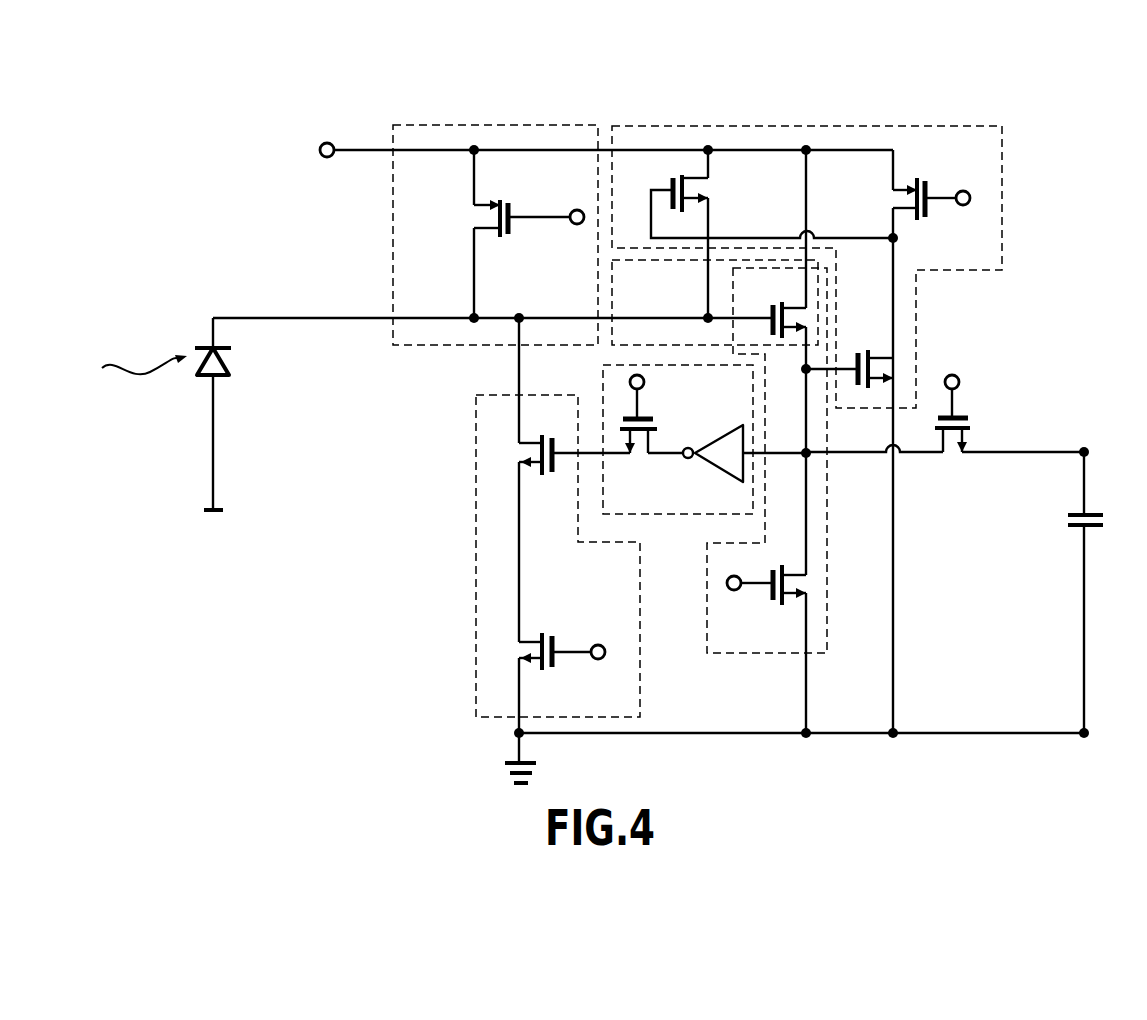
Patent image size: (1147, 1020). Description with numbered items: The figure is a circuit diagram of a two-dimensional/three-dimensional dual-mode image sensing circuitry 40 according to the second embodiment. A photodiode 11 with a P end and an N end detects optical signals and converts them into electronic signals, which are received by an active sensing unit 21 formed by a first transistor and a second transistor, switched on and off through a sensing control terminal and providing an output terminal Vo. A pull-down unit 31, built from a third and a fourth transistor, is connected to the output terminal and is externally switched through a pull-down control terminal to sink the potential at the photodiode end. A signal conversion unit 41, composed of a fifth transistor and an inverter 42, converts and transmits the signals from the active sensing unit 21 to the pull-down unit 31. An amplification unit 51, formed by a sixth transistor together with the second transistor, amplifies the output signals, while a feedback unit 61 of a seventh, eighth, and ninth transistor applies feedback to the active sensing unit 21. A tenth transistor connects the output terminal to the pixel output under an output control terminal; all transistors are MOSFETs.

The photodiode 11 is at (233, 365).
The active sensing unit 21 is at (504, 125).
The pull-down unit 31 is at (476, 578).
The 2D/3D dual-mode image sensing circuitry 40 is at (280, 606).
The signal conversion unit 41 is at (603, 378).
The inverter 42 is at (718, 468).
The amplification unit 51 is at (767, 653).
The feedback unit 61 is at (812, 126).